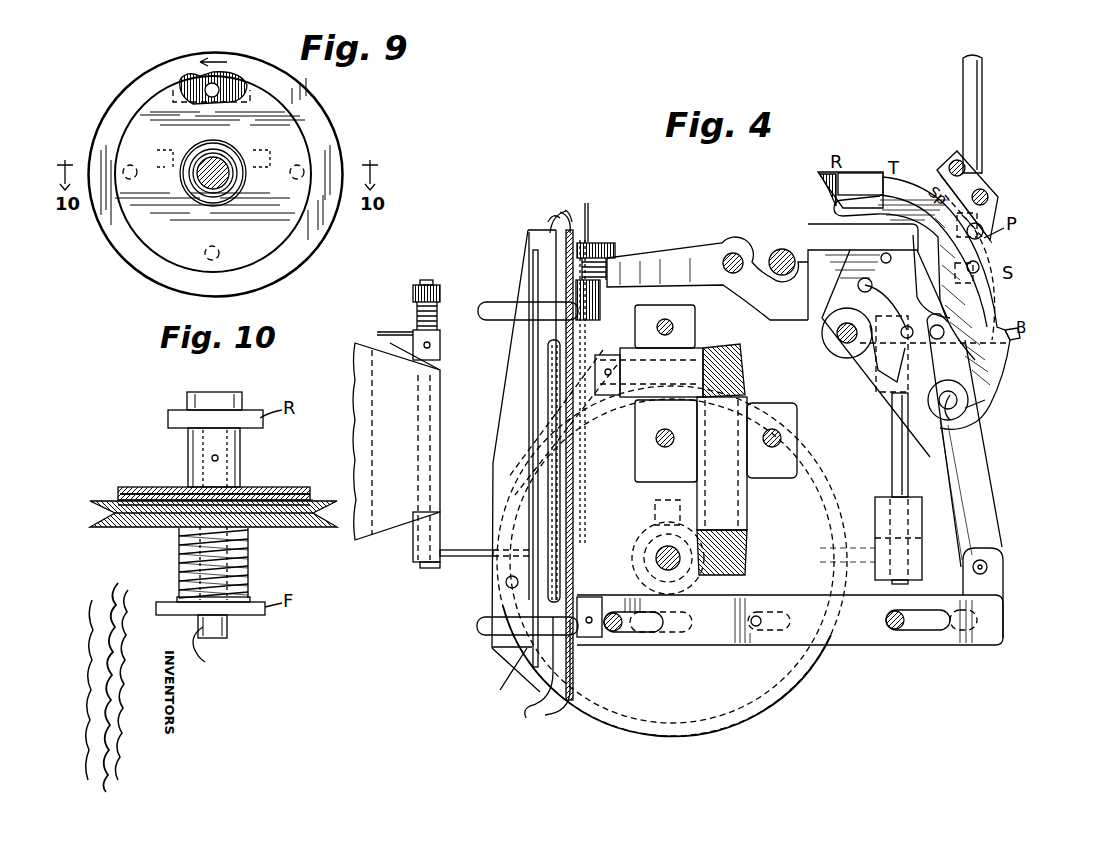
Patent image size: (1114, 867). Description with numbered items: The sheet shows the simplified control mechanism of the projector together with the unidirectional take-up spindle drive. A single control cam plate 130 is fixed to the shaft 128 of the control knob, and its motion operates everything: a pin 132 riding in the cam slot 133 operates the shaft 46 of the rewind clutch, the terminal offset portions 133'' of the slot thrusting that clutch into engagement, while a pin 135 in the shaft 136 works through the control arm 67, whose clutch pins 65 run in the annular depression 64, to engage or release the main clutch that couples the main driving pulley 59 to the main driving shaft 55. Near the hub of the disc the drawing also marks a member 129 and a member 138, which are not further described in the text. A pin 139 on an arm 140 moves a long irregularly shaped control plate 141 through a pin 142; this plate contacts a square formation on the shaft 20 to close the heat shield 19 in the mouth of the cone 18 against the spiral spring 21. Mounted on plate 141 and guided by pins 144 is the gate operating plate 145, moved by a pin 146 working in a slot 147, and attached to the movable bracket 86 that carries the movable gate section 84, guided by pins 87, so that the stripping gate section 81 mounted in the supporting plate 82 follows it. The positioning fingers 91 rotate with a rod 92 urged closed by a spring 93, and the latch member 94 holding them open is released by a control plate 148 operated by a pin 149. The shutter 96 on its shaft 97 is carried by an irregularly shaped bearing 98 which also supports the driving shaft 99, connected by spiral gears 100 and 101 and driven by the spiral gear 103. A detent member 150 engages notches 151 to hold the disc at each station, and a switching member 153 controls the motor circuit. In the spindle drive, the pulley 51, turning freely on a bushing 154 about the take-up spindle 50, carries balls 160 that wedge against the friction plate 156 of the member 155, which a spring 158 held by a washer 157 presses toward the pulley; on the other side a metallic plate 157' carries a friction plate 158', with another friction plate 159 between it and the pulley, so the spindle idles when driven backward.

In FIG. 4, the cone 18 is at (362, 545).
In FIG. 4, the heat shield 19 is at (405, 548).
In FIG. 4, the shaft 20 is at (427, 568).
In FIG. 4, the spiral spring 21 is at (415, 302).
In FIG. 4, the shaft 46 is at (983, 118).
In FIG. 9, the take-up spindle 50 is at (236, 181).
In FIG. 10, the take-up spindle 50 is at (228, 631).
In FIG. 9, the pulley 51 is at (316, 110).
In FIG. 10, the pulley 51 is at (100, 527).
In FIG. 4, the main driving shaft 55 is at (660, 552).
In FIG. 4, the main driving pulley 59 is at (833, 438).
In FIG. 4, the annular depression 64 is at (640, 567).
In FIG. 4, the clutch pins 65 is at (668, 502).
In FIG. 4, the control arm 67 is at (876, 505).
In FIG. 4, the gate section 81 is at (560, 706).
In FIG. 4, the film-guiding and structure-supporting plate 82 is at (574, 690).
In FIG. 4, the movable gate section 84 is at (540, 712).
In FIG. 4, the movable bracket 86 is at (507, 437).
In FIG. 4, the pins 87 is at (495, 302).
In FIG. 4, the positioning fingers 91 is at (530, 300).
In FIG. 4, the rod 92 is at (590, 640).
In FIG. 4, the spring 93 is at (603, 252).
In FIG. 4, the latch member 94 is at (600, 243).
In FIG. 4, the shutter 96 is at (585, 203).
In FIG. 4, the shaft 97 is at (601, 350).
In FIG. 4, the bearing 98 is at (640, 470).
In FIG. 4, the driving shaft 99 is at (747, 494).
In FIG. 4, the spiral gear 100 is at (730, 349).
In FIG. 4, the spiral gear 101 is at (745, 365).
In FIG. 4, the spiral gear 103 is at (747, 540).
In FIG. 4, the shaft 128 is at (838, 343).
In FIG. 4, the pawl 129 is at (855, 357).
In FIG. 4, the control cam plate 130 is at (995, 380).
In FIG. 4, the pin 132 is at (985, 270).
In FIG. 4, the cam slot 133 is at (957, 279).
In FIG. 4, the terminal offset portions 133'' is at (913, 301).
In FIG. 4, the pin 135 is at (900, 320).
In FIG. 4, the shaft 136 is at (892, 440).
In FIG. 4, the hub 138 is at (822, 336).
In FIG. 4, the pin 139 is at (1010, 343).
In FIG. 4, the arm 140 is at (985, 498).
In FIG. 4, the control plate 141 is at (468, 558).
In FIG. 4, the pin 142 is at (990, 565).
In FIG. 4, the pins 144 is at (620, 633).
In FIG. 4, the gate operating plate 145 is at (680, 634).
In FIG. 4, the pin 146 is at (752, 632).
In FIG. 4, the slot 147 is at (762, 632).
In FIG. 4, the control plate 148 is at (672, 262).
In FIG. 4, the pin 149 is at (800, 262).
In FIG. 4, the detent member 150 is at (988, 195).
In FIG. 4, the notches 151 is at (1015, 330).
In FIG. 4, the switching member 153 is at (852, 173).
In FIG. 9, the bushing 154 is at (207, 192).
In FIG. 10, the bushing 154 is at (215, 652).
In FIG. 9, the member 155 is at (205, 190).
In FIG. 10, the member 155 is at (243, 541).
In FIG. 9, the friction plate 156 is at (293, 142).
In FIG. 10, the friction plate 156 is at (150, 527).
In FIG. 10, the washer 157 is at (241, 583).
In FIG. 10, the metallic plate 157' is at (214, 471).
In FIG. 9, the spring 158 is at (144, 197).
In FIG. 10, the spring 158 is at (241, 563).
In FIG. 10, the friction plate 158' is at (191, 477).
In FIG. 10, the friction plate 159 is at (118, 500).
In FIG. 9, the balls 160 is at (213, 88).
In FIG. 10, the balls 160 is at (240, 487).